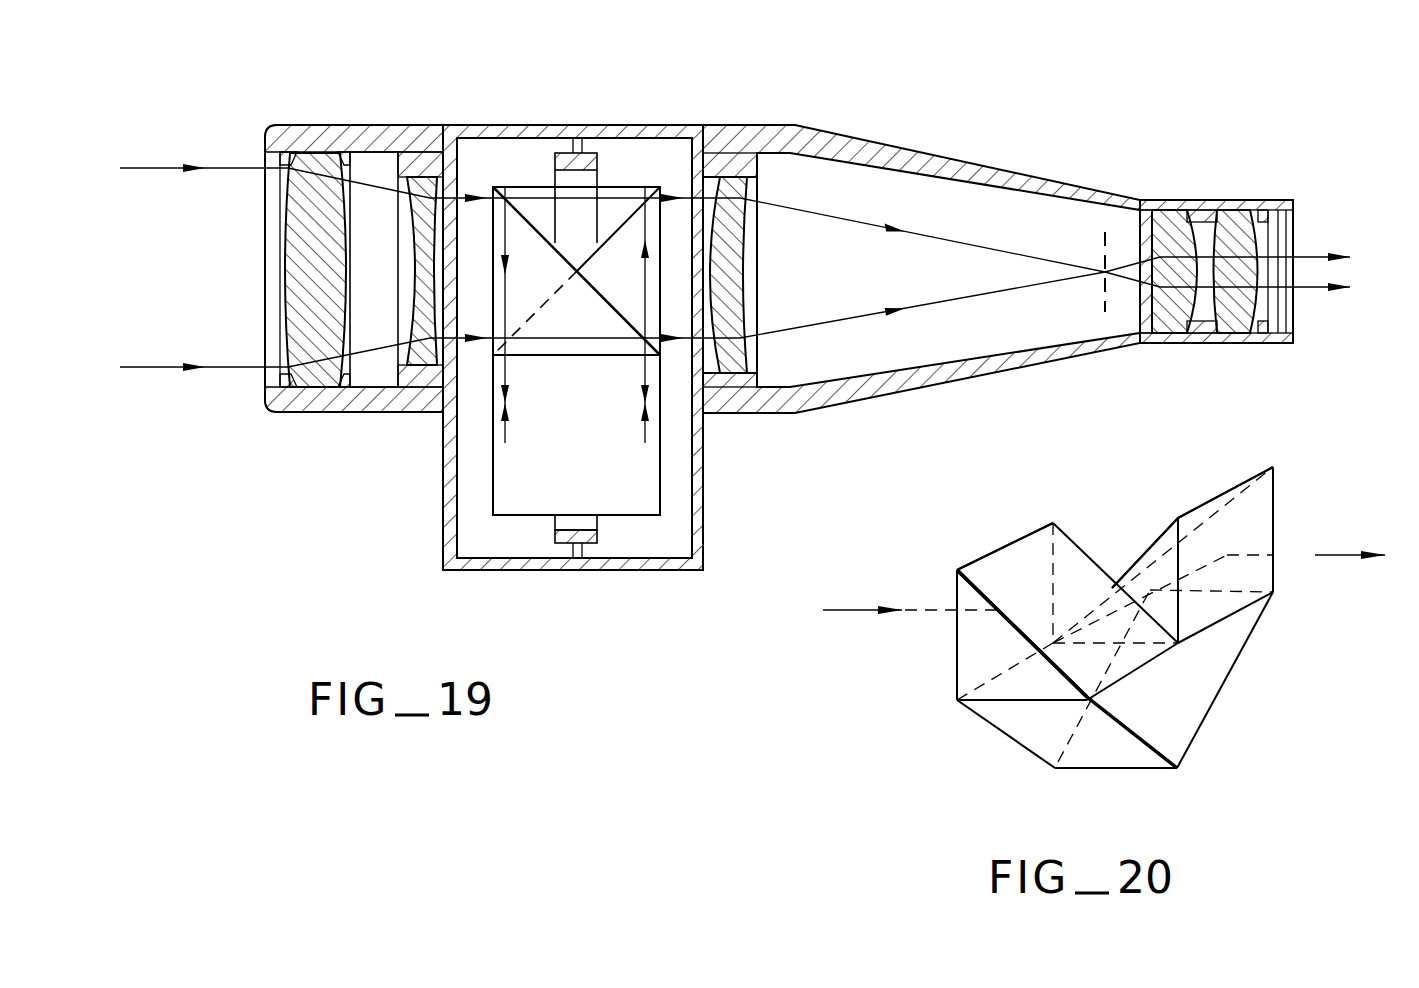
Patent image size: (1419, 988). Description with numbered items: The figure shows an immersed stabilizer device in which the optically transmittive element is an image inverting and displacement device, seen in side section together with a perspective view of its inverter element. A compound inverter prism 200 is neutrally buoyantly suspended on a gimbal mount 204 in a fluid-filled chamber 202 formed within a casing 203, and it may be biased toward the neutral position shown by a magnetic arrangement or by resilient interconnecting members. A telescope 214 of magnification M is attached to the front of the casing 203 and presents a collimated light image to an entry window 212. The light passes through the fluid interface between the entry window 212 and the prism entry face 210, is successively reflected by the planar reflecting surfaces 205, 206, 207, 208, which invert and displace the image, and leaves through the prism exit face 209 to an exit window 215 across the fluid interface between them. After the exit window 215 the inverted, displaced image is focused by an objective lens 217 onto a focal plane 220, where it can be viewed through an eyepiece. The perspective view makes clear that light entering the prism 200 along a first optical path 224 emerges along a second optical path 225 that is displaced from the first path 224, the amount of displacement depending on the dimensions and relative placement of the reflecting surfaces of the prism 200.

In FIG. 19, the compound inverter prism 200 is at (664, 473).
In FIG. 20, the compound inverter prism 200 is at (1188, 743).
In FIG. 19, the fluid-filled chamber 202 is at (673, 152).
In FIG. 19, the casing 203 is at (525, 125).
In FIG. 19, the gimbal mount 204 is at (592, 157).
In FIG. 19, the planar reflecting surface 205 is at (533, 225).
In FIG. 20, the planar reflecting surface 205 is at (1010, 572).
In FIG. 19, the planar reflecting surface 206 is at (595, 453).
In FIG. 20, the planar reflecting surface 206 is at (1040, 737).
In FIG. 20, the planar reflecting surface 207 is at (1180, 685).
In FIG. 19, the planar reflecting surface 208 is at (623, 218).
In FIG. 20, the planar reflecting surface 208 is at (1157, 540).
In FIG. 19, the prism exit face 209 is at (655, 192).
In FIG. 20, the prism exit face 209 is at (1255, 518).
In FIG. 19, the entry face 210 is at (492, 207).
In FIG. 20, the entry face 210 is at (957, 587).
In FIG. 19, the entry window 212 is at (443, 365).
In FIG. 19, the telescope 214 is at (300, 125).
In FIG. 19, the exit window 215 is at (748, 200).
In FIG. 19, the objective lens 217 is at (758, 195).
In FIG. 19, the focal plane 220 is at (1113, 252).
In FIG. 20, the first optical path 224 is at (860, 612).
In FIG. 20, the second optical path 225 is at (1343, 560).